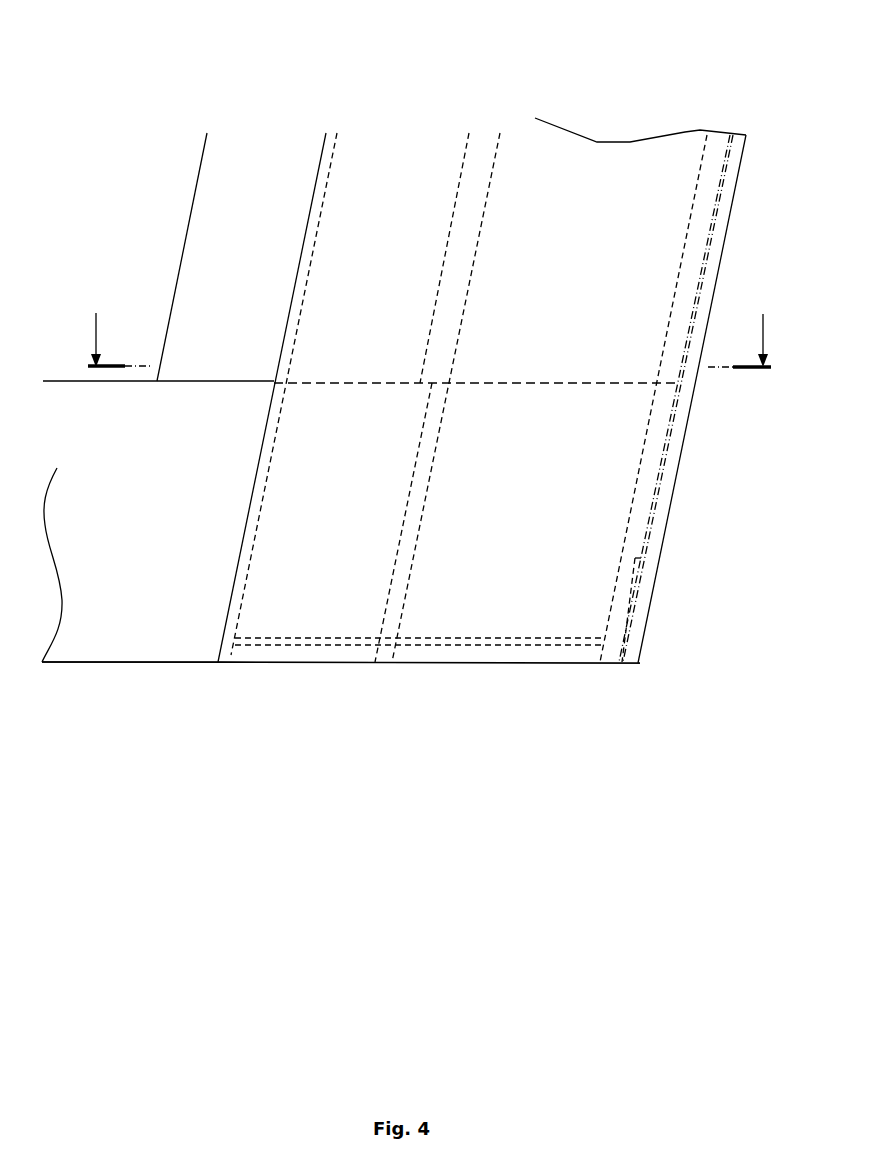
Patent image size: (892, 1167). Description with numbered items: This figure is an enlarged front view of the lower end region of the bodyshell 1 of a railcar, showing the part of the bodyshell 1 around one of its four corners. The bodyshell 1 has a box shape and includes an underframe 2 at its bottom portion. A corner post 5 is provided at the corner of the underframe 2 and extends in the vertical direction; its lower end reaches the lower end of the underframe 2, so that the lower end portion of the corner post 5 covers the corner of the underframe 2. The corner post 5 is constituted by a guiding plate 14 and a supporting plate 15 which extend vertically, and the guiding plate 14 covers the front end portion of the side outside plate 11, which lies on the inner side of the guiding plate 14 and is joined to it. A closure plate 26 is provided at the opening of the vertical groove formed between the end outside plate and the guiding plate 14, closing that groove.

The bodyshell 1 is at (746, 97).
The underframe 2 is at (155, 652).
The corner post 5 is at (281, 672).
The side outside plate 11 is at (720, 212).
The guiding plate 14 is at (343, 656).
The supporting plate 15 is at (477, 622).
The closure plate 26 is at (192, 217).